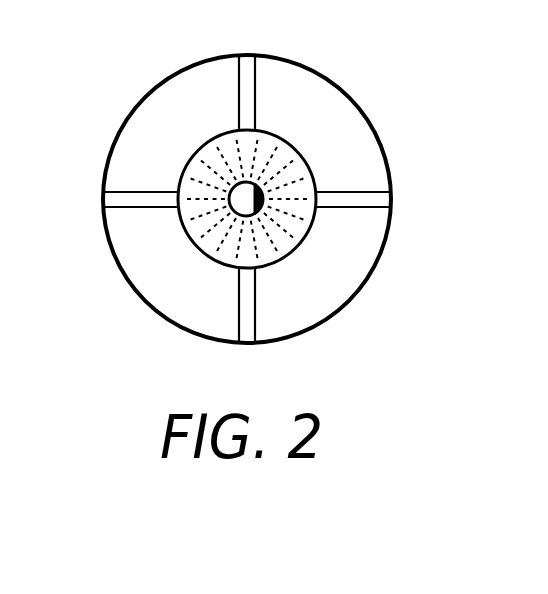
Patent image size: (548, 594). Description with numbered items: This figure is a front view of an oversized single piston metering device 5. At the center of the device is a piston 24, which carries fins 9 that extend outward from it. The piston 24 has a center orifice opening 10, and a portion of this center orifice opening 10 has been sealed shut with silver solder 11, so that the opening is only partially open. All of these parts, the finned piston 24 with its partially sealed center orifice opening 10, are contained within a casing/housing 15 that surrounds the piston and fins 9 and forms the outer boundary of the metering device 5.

The oversized single piston metering device 5 is at (147, 242).
The fins 9 is at (343, 197).
The center orifice opening 10 is at (242, 197).
The silver solder 11 is at (261, 208).
The casing/housing 15 is at (129, 118).
The piston 24 is at (227, 167).